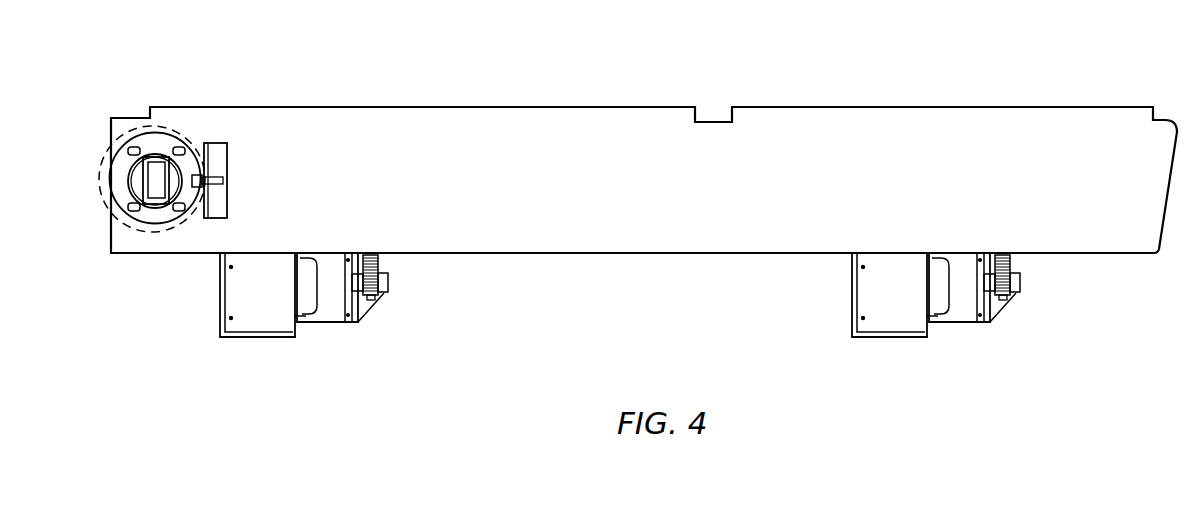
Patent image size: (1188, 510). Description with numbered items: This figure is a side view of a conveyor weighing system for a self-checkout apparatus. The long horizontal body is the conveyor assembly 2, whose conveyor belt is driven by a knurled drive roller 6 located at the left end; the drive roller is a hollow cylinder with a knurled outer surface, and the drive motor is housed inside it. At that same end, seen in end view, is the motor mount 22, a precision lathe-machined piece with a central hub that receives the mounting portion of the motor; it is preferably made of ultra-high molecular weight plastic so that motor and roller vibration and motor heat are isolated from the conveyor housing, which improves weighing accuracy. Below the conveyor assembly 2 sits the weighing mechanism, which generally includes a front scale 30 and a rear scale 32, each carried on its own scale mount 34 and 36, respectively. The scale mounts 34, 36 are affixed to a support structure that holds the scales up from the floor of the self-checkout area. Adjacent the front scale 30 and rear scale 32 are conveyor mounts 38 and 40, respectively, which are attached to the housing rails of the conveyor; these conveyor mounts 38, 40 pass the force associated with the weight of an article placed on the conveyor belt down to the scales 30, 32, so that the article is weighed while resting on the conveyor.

The conveyor assembly 2 is at (874, 102).
The drive roller 6 is at (166, 121).
The motor mount 22 is at (152, 225).
The front scale 30 is at (308, 303).
The rear scale 32 is at (940, 303).
The scale mount 34 is at (219, 324).
The scale mount 36 is at (851, 324).
The conveyor mount 38 is at (389, 286).
The conveyor mount 40 is at (1021, 286).